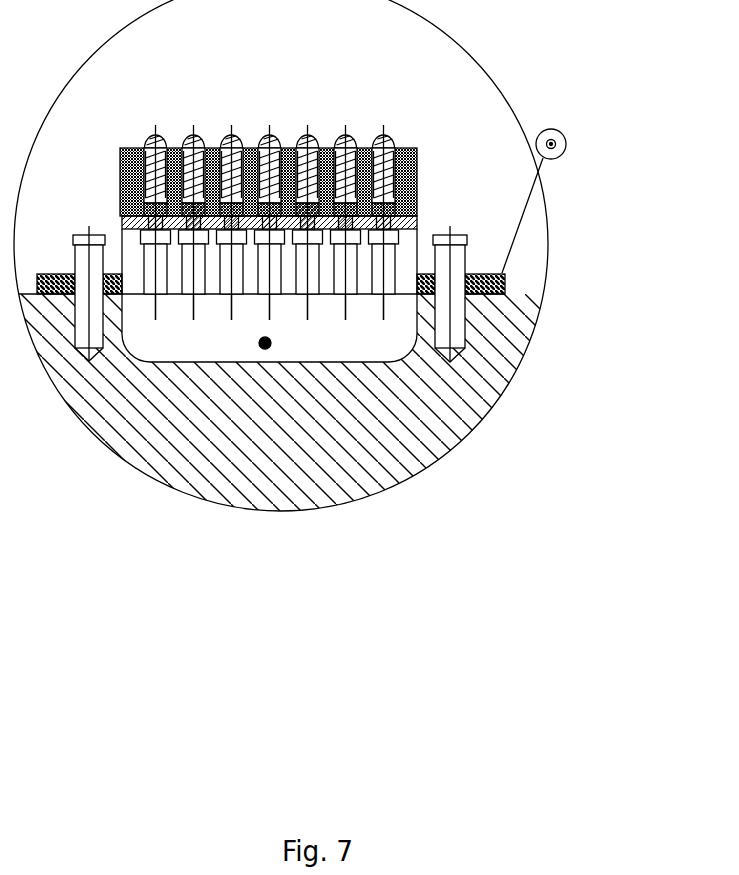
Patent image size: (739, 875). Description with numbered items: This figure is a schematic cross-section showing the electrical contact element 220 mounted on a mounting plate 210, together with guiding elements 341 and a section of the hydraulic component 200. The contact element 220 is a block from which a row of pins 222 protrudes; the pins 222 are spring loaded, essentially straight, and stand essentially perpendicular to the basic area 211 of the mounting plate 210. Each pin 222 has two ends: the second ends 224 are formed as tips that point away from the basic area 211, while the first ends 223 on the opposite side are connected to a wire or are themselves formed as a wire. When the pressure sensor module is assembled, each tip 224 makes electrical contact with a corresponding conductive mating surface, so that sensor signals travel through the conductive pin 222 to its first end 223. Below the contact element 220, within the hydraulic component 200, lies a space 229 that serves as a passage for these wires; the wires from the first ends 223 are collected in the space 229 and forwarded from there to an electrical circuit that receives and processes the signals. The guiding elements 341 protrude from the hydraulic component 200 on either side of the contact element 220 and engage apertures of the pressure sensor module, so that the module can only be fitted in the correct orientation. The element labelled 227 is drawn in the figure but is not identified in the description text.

The hydraulic component 200 is at (437, 433).
The mounting plate 210 is at (505, 294).
The basic area 211 is at (525, 293).
The electrical contact element 220 is at (309, 194).
The pins 222 is at (121, 156).
The first ends 223 is at (158, 298).
The second ends 224 is at (164, 133).
The spring 227 is at (242, 145).
The space 229 is at (271, 343).
The guiding elements 341 is at (461, 236).